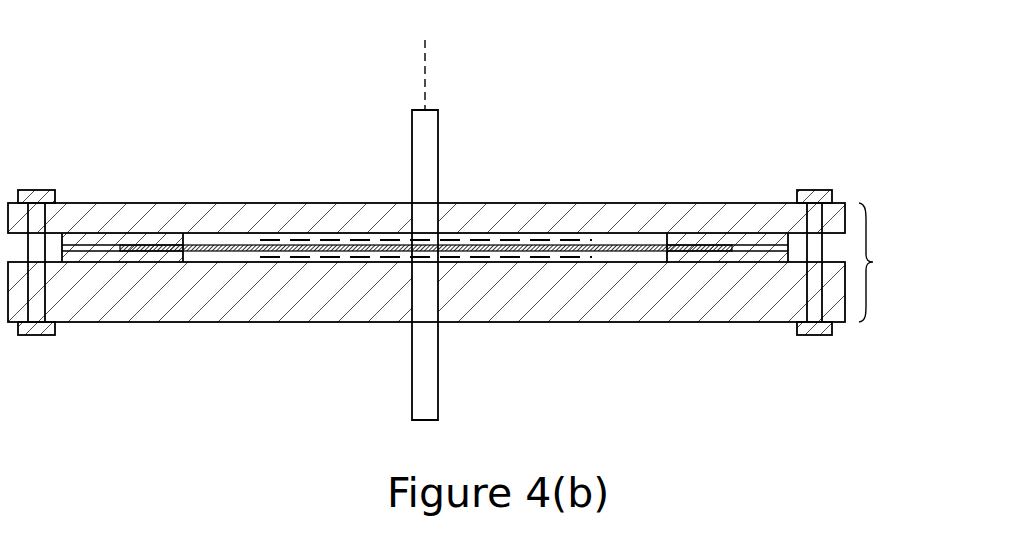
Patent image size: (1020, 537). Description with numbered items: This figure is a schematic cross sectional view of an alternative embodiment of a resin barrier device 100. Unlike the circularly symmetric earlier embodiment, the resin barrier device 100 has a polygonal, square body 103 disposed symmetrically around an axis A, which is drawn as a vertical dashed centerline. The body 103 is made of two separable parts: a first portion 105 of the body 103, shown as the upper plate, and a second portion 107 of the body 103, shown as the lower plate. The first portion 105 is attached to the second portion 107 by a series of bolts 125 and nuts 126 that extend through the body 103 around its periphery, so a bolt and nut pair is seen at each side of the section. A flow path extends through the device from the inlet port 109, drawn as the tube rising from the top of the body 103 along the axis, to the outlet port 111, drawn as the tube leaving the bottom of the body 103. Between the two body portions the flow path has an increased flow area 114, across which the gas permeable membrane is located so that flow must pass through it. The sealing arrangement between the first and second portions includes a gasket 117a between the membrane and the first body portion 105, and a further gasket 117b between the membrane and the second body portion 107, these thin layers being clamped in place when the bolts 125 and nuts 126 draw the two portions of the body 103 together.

The resin barrier device 100 is at (163, 138).
The body 103 is at (891, 262).
The first portion of the body 105 is at (258, 203).
The second portion of the body 107 is at (250, 290).
The inlet port 109 is at (438, 153).
The outlet port 111 is at (440, 392).
The increased flow area 114 is at (630, 251).
The gasket 117a is at (78, 244).
The further gasket 117b is at (97, 256).
The bolts 125 is at (810, 190).
The nuts 126 is at (815, 337).